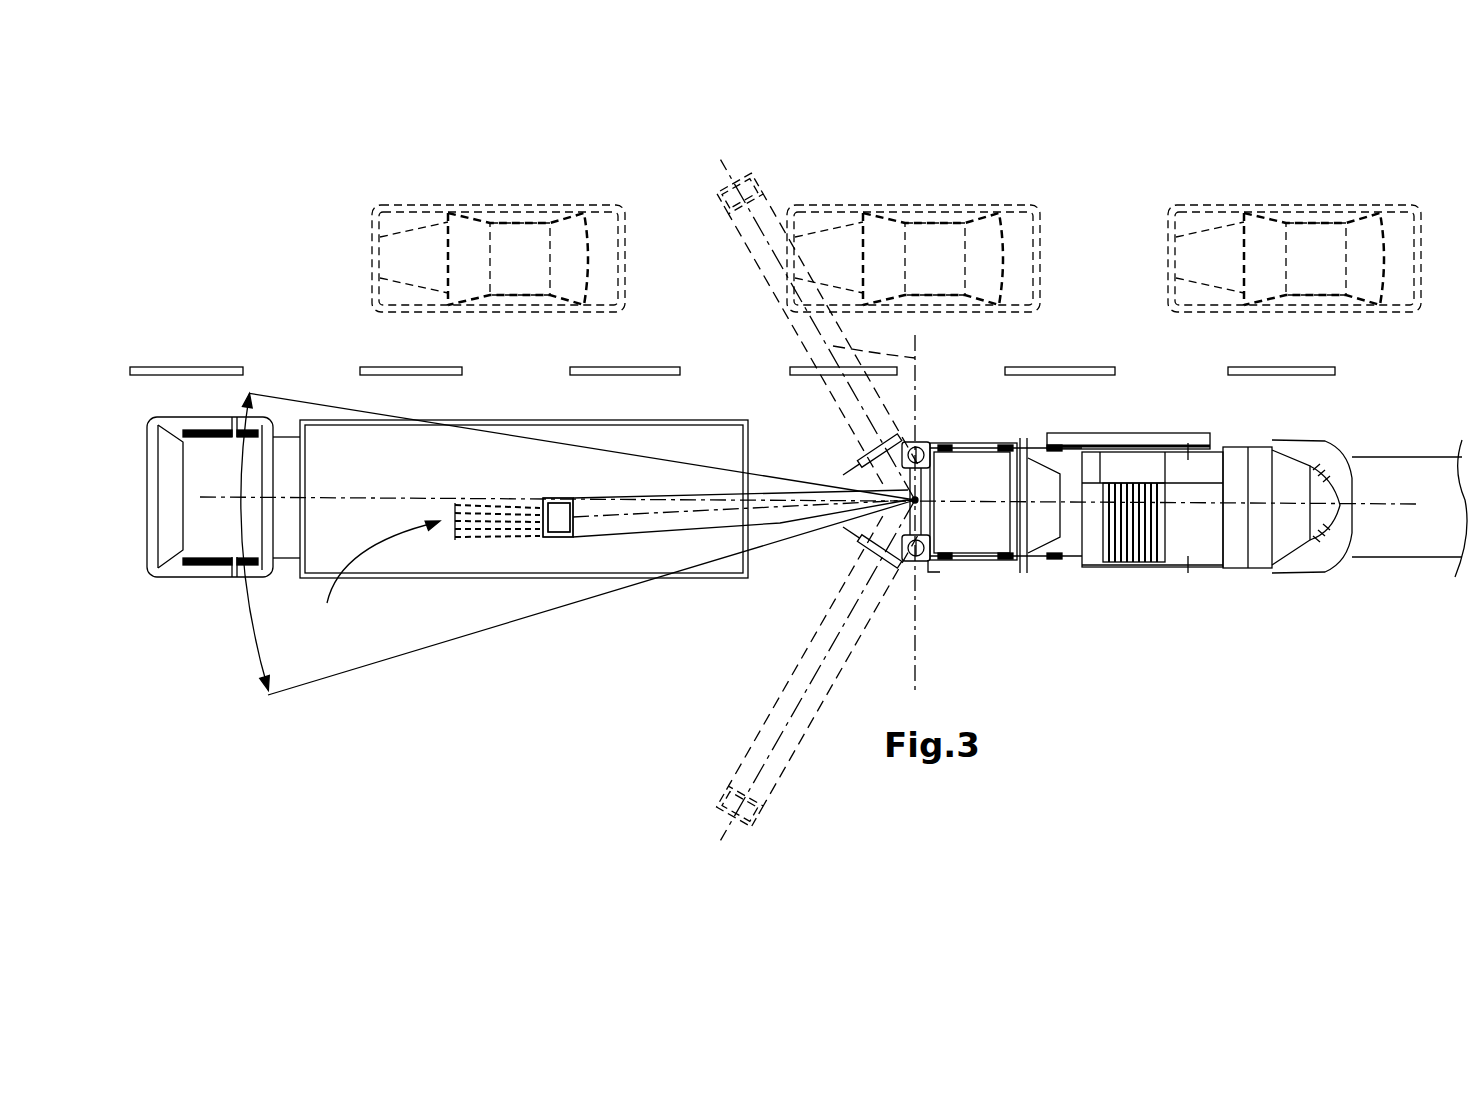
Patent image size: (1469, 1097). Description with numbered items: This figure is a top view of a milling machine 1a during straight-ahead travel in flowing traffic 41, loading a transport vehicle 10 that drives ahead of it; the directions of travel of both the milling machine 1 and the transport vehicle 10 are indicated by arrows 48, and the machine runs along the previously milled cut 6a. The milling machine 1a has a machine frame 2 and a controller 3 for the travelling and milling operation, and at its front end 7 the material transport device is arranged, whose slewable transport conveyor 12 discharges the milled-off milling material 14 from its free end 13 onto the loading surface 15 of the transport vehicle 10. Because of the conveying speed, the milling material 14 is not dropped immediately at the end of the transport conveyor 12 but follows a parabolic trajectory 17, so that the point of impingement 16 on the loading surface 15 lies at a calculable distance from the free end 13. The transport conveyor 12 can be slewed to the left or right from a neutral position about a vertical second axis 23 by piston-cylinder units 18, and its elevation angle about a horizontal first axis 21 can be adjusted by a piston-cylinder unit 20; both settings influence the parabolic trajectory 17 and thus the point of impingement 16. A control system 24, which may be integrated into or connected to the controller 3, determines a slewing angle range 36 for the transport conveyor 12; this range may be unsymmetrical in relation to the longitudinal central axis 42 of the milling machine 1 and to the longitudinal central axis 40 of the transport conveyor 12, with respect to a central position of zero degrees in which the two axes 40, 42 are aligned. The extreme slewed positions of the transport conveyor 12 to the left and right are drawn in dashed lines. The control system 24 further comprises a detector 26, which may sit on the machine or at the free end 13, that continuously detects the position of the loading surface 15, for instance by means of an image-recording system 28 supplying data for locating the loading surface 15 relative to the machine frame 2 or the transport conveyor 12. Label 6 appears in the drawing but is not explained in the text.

The milling machine 1 is at (1140, 483).
The milling machine 1a is at (958, 491).
The machine frame 2 is at (1006, 502).
The controller 3 is at (1050, 460).
The pivot region 6 is at (822, 461).
The previously milled cut 6a is at (1392, 546).
The front end 7 is at (928, 400).
The transport vehicle 10 is at (373, 340).
The transport conveyor 12 is at (745, 488).
The free end 13 is at (556, 556).
The milling material 14 is at (480, 505).
The loading surface 15 is at (657, 561).
The point of impingement 16 is at (372, 581).
The parabolic trajectory 17 is at (483, 556).
The piston-cylinder units 18 is at (868, 452).
The piston-cylinder unit 20 is at (840, 487).
The horizontal first axis 21 is at (802, 344).
The vertical second axis 23 is at (945, 563).
The control system 24 is at (1088, 470).
The detector 26 is at (558, 497).
The image-recording system 28 is at (558, 517).
The slewing angle range 36 is at (243, 455).
The longitudinal central axis 40 is at (714, 145).
The flowing traffic 41 is at (1015, 172).
The longitudinal central axis 42 is at (1393, 498).
The arrows 48 is at (453, 613).